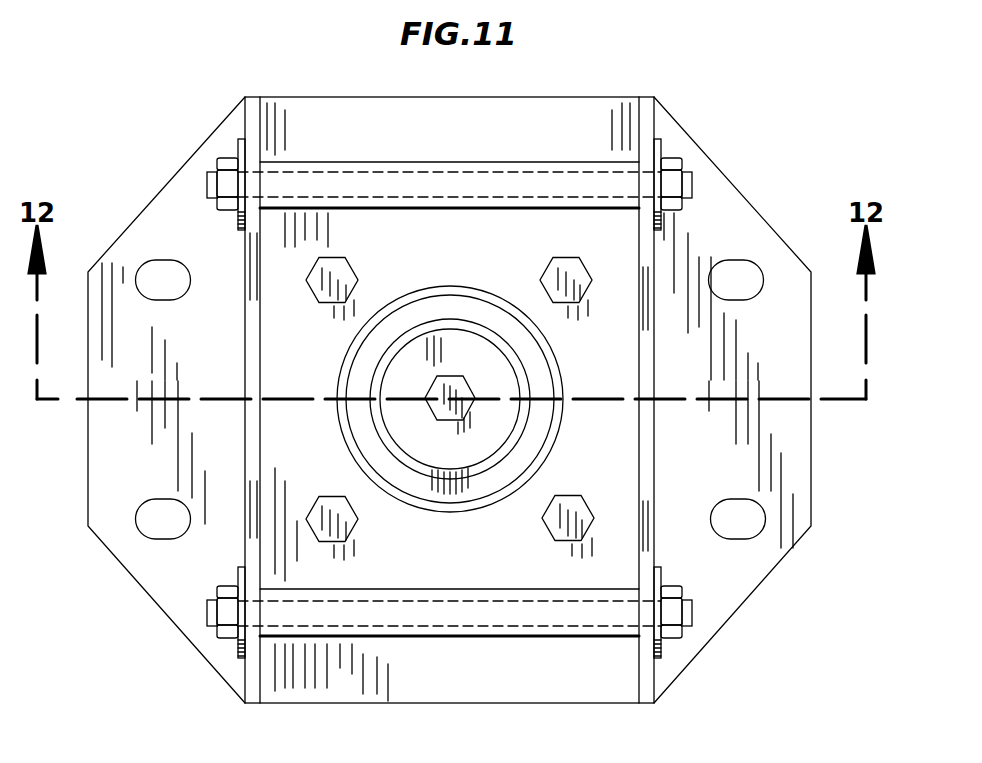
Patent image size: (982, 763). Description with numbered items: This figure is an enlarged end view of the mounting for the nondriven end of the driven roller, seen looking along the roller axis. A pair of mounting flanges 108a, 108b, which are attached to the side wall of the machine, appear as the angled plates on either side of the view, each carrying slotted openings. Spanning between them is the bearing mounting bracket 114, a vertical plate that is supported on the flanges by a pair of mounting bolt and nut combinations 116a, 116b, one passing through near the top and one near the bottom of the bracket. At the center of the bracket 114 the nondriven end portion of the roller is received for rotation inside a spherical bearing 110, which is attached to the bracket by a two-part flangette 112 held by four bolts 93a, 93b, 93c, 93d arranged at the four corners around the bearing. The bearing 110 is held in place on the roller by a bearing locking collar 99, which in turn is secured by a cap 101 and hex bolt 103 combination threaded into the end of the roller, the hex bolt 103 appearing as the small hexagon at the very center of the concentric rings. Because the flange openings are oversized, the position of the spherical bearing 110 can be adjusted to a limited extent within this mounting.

The bolt 93a is at (343, 268).
The bolt 93b is at (553, 273).
The bolt 93c is at (553, 522).
The bolt 93d is at (348, 524).
The bearing locking collar 99 is at (519, 424).
The cap 101 is at (507, 387).
The hex bolt 103 is at (467, 387).
The mounting flange 108a is at (168, 591).
The mounting flange 108b is at (793, 479).
The spherical bearing 110 is at (378, 450).
The two-part flangette 112 is at (363, 344).
The bearing mounting bracket 114 is at (533, 105).
The mounting bolt and nut combination 116a is at (679, 160).
The mounting bolt and nut combination 116b is at (683, 611).